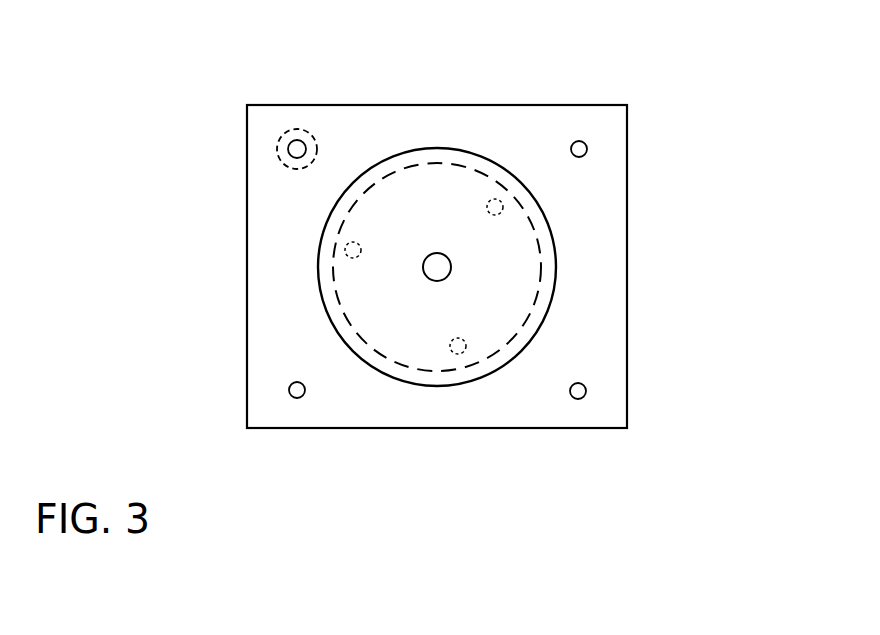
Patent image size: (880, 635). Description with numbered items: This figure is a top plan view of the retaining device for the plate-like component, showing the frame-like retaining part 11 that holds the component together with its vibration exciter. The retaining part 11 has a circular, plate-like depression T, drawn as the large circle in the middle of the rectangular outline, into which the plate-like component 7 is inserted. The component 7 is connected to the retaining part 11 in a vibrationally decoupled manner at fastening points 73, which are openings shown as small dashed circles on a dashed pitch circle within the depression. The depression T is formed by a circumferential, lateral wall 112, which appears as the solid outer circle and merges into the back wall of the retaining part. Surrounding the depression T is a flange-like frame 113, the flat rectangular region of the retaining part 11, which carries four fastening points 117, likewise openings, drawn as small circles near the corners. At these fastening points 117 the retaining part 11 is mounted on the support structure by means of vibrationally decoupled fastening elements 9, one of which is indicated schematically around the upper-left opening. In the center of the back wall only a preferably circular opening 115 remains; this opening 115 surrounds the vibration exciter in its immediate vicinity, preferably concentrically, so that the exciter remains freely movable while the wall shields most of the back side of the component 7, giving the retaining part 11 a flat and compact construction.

The retaining part 11 is at (441, 219).
The flange-like frame 113 is at (260, 239).
The lateral wall 112 is at (349, 222).
The depression T is at (483, 152).
The component 7 is at (537, 261).
The opening 115 is at (450, 269).
The fastening points 73 is at (502, 212).
The fastening points 117 is at (300, 147).
The fastening elements 9 is at (283, 137).